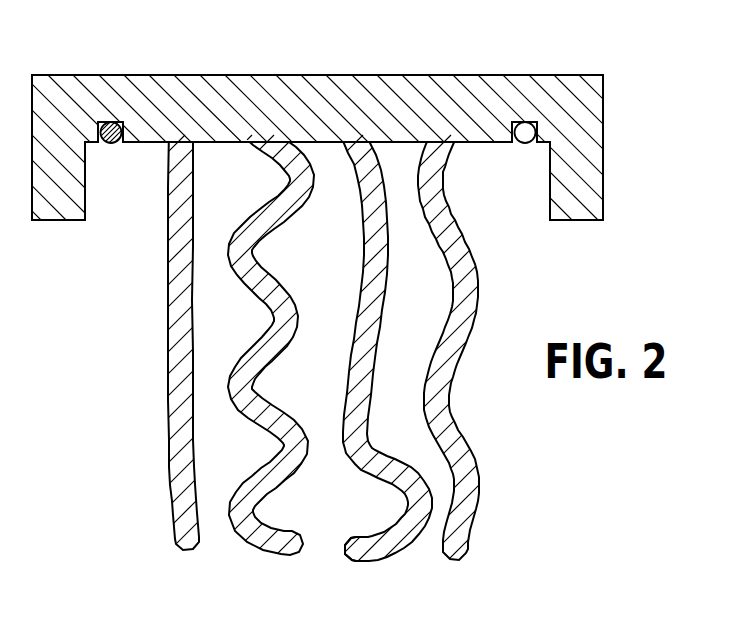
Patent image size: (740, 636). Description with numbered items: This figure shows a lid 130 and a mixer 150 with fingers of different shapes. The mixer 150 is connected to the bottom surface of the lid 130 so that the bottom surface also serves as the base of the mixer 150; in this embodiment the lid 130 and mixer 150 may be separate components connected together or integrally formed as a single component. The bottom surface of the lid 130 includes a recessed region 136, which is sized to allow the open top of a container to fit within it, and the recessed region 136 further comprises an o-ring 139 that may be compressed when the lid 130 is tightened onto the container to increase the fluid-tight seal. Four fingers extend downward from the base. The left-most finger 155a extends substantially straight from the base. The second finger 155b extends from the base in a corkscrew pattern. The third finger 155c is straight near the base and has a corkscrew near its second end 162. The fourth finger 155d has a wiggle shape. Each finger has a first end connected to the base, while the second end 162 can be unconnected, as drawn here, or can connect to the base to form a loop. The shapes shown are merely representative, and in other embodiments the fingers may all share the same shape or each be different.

The lid 130 is at (386, 86).
The o-ring 139 is at (110, 121).
The recessed region 136 is at (541, 130).
The mixer 150 is at (370, 370).
The left-most finger 155a is at (170, 512).
The second finger 155b is at (256, 552).
The third finger 155c is at (394, 555).
The fourth finger 155d is at (480, 511).
The second end 162 is at (345, 545).